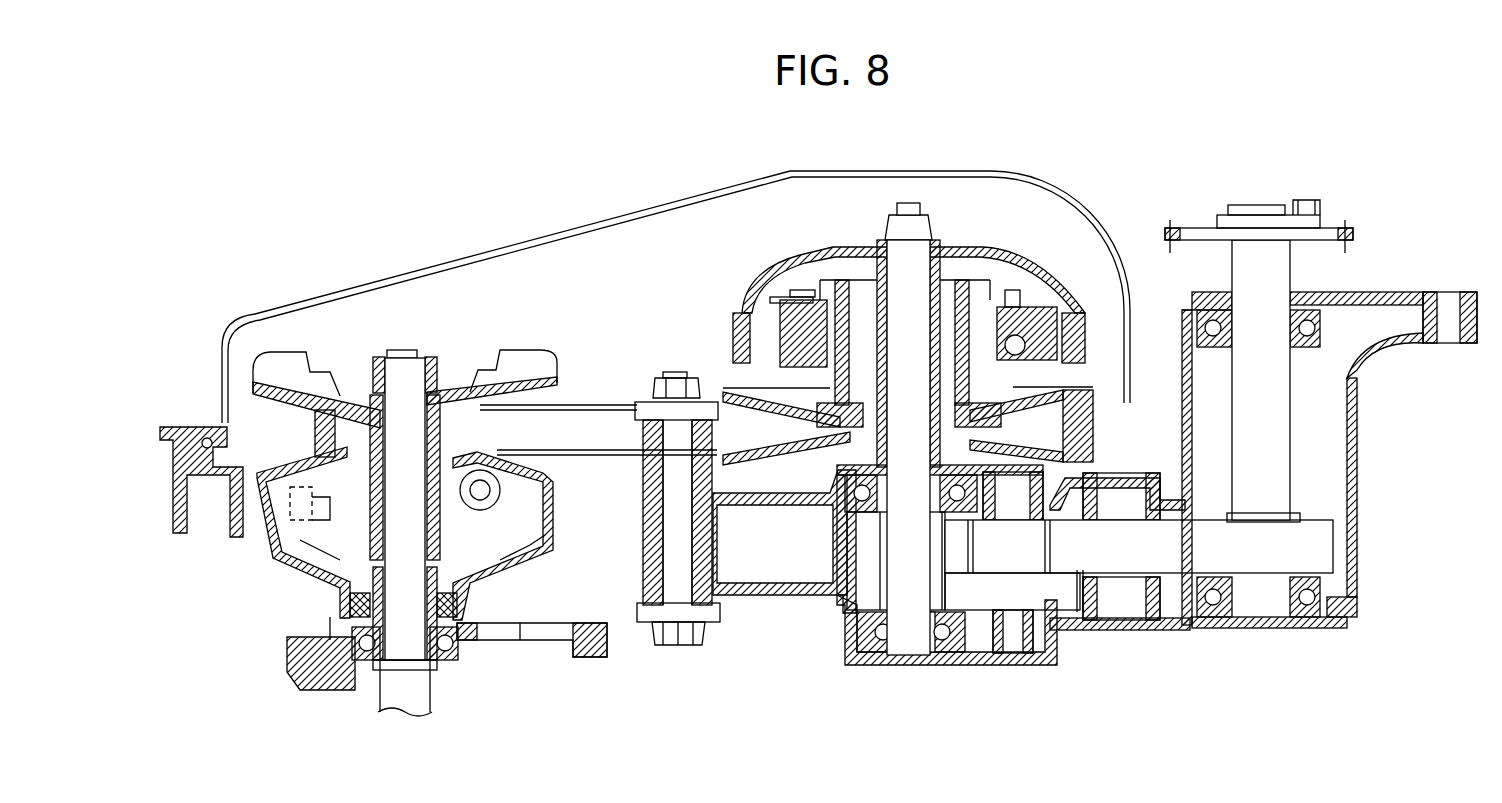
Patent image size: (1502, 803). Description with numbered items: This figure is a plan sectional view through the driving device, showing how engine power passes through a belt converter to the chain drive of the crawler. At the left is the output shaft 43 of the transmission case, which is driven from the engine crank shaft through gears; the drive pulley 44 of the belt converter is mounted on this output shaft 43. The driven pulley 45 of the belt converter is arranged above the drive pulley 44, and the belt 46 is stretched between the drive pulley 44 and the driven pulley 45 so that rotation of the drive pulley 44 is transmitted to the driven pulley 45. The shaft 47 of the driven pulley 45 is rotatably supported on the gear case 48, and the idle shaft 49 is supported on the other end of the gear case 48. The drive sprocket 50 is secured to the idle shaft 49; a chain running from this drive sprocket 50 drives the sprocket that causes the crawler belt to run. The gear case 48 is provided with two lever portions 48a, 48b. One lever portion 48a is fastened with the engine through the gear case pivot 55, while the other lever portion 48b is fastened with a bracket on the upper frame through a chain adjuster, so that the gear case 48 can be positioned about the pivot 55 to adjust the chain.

The output shaft 43 is at (413, 703).
The drive pulley 44 is at (302, 377).
The driven pulley 45 is at (1040, 395).
The belt 46 is at (582, 432).
The shaft 47 is at (913, 595).
The gear case 48 is at (1120, 628).
The lever portion 48a is at (802, 588).
The lever portion 48b is at (1403, 338).
The idle shaft 49 is at (1253, 258).
The drive sprocket 50 is at (1332, 232).
The gear case pivot 55 is at (682, 590).